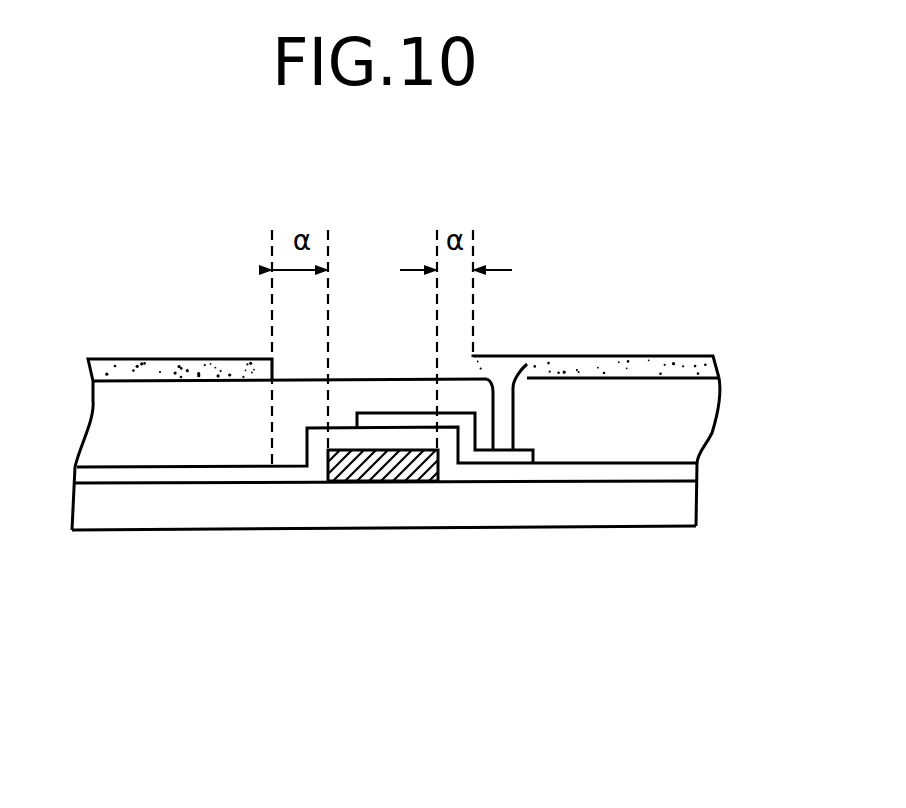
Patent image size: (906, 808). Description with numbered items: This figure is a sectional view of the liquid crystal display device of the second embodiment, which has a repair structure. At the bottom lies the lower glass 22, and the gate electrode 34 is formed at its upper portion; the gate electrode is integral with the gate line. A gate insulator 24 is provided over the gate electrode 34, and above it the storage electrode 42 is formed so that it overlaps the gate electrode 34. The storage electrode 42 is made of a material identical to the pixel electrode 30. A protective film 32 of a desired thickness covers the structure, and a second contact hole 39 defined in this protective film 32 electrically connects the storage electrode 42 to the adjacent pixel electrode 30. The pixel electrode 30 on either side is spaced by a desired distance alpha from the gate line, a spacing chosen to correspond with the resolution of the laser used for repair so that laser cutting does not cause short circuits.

The lower glass 22 is at (688, 508).
The gate insulator 24 is at (688, 472).
The pixel electrode 30 is at (151, 358).
The protective film 32 is at (108, 408).
The gate electrode 34 is at (363, 468).
The second contact hole 39 is at (527, 364).
The storage electrode 42 is at (485, 463).